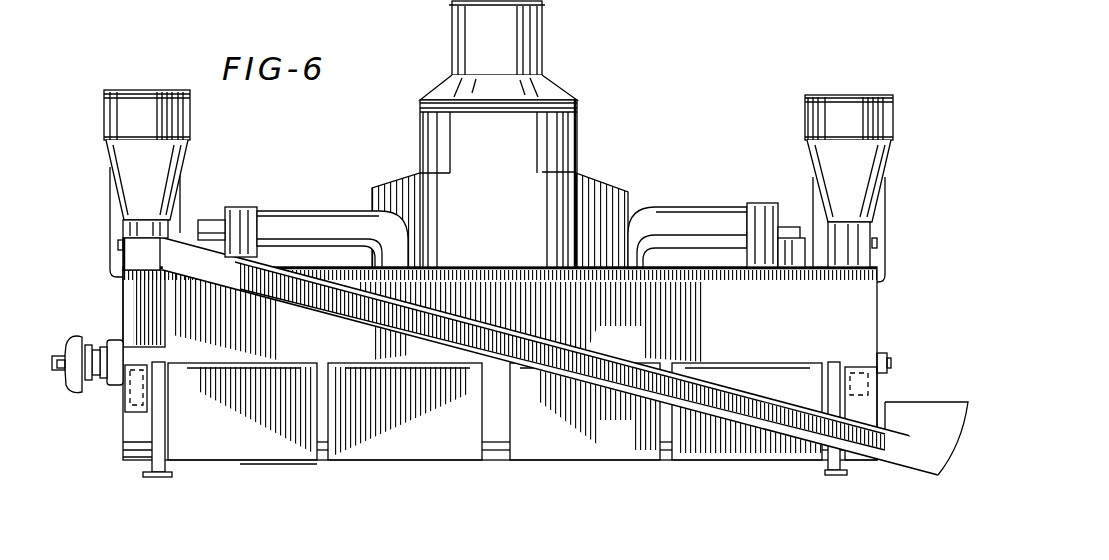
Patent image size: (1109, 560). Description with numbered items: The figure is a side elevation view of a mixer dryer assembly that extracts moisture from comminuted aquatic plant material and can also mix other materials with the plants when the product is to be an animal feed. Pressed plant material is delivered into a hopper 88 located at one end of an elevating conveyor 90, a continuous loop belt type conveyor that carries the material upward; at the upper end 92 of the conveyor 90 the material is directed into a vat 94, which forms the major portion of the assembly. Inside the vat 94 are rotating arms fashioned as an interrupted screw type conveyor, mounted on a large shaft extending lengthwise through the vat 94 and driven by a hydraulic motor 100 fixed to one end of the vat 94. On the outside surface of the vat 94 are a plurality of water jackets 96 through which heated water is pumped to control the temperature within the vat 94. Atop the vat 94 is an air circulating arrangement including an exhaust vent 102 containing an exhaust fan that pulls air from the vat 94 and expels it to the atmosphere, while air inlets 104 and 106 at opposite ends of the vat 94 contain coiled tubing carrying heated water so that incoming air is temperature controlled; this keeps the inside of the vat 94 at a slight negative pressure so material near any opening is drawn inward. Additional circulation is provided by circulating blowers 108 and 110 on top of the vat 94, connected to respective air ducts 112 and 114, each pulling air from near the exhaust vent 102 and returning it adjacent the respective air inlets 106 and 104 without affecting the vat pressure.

The hopper 88 is at (930, 412).
The elevating conveyor 90 is at (597, 348).
The upper end 92 is at (135, 257).
The vat 94 is at (873, 318).
The water jackets 96 is at (347, 363).
The hydraulic motor 100 is at (52, 358).
The exhaust vent 102 is at (577, 152).
The air inlet 104 is at (103, 115).
The air inlet 106 is at (897, 123).
The circulating blower 108 is at (783, 178).
The circulating blower 110 is at (245, 207).
The air duct 112 is at (695, 210).
The air duct 114 is at (345, 180).